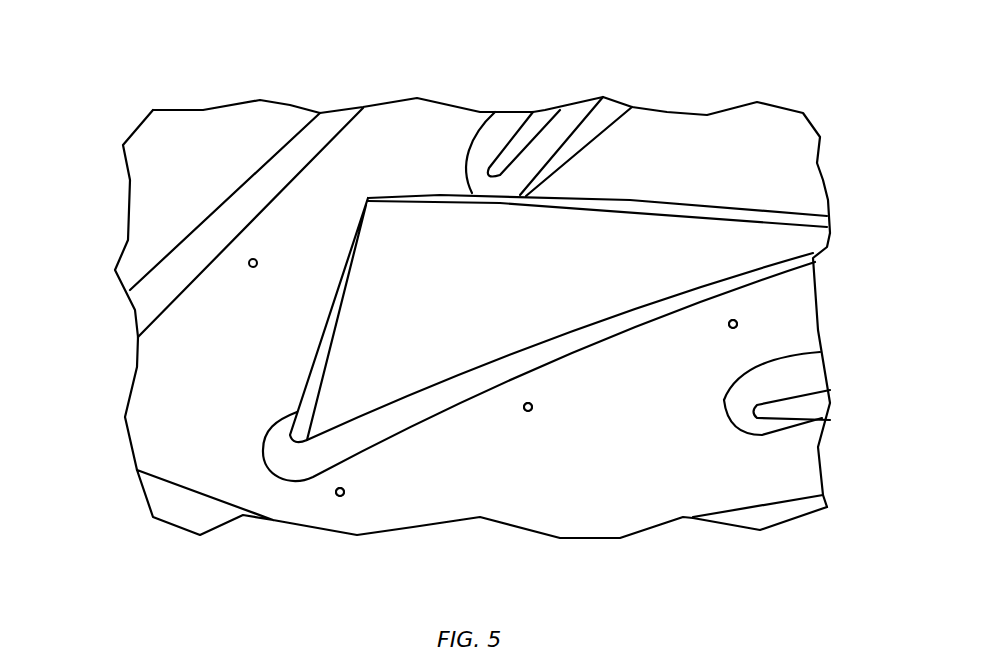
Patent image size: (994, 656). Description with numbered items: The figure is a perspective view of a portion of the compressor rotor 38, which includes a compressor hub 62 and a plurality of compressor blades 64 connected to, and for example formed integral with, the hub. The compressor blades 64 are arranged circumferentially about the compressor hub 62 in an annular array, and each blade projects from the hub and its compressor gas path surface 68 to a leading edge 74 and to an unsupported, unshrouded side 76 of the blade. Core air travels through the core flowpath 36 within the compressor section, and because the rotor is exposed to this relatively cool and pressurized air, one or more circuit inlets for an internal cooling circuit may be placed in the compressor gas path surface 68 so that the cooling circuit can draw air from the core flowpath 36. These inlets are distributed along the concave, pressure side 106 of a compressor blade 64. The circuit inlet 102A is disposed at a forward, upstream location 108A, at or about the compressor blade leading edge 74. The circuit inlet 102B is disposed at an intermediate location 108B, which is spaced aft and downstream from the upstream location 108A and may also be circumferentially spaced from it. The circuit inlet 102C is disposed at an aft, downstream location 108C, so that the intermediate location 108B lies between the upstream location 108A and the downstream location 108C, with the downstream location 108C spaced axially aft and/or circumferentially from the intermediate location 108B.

The compressor rotor 38 is at (790, 78).
The core flowpath 36 is at (174, 380).
The compressor hub 62 is at (170, 495).
The compressor blades 64 is at (405, 186).
The compressor gas path surface 68 is at (613, 518).
The leading edge 74 is at (318, 356).
The side 76 is at (628, 203).
The side 106 is at (577, 305).
The circuit inlet 102A is at (348, 493).
The circuit inlet 102B is at (249, 268).
The circuit inlet 102C is at (738, 324).
The upstream location 108A is at (335, 493).
The intermediate location 108B is at (520, 408).
The downstream location 108C is at (728, 329).